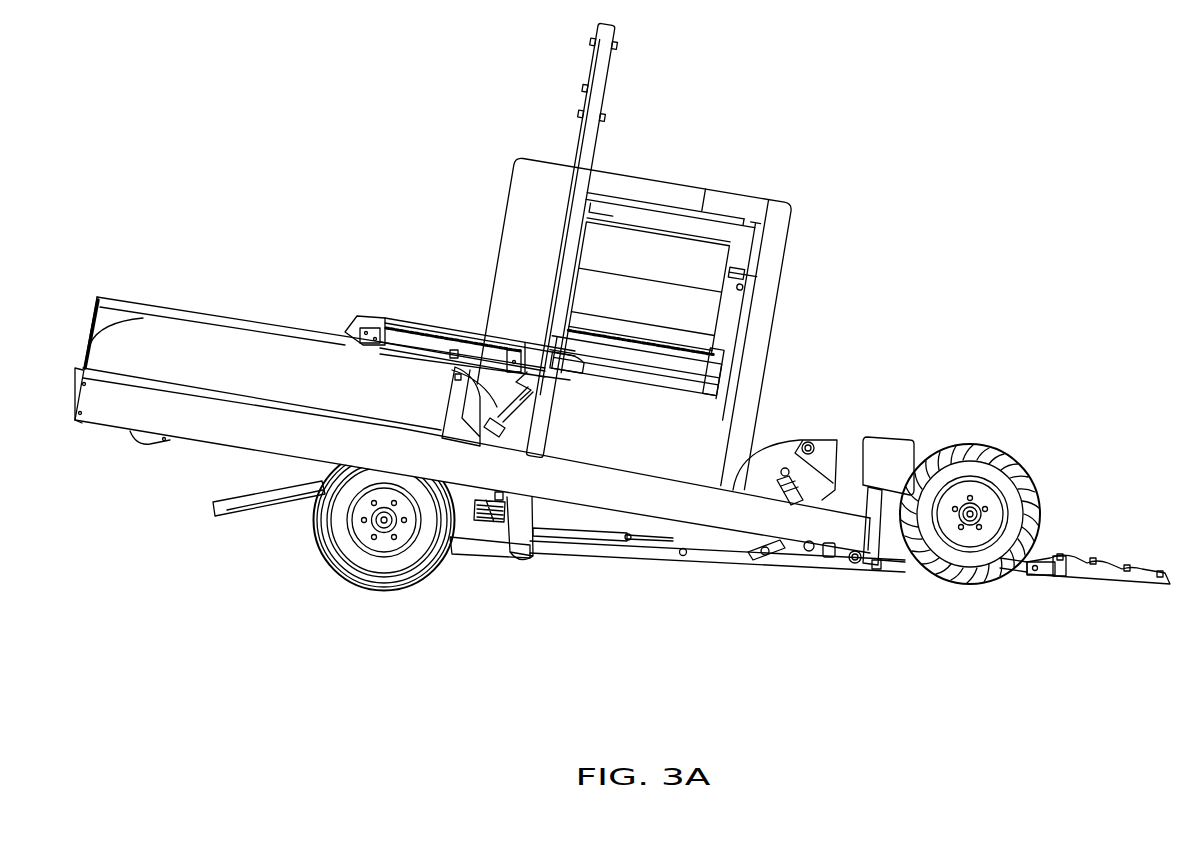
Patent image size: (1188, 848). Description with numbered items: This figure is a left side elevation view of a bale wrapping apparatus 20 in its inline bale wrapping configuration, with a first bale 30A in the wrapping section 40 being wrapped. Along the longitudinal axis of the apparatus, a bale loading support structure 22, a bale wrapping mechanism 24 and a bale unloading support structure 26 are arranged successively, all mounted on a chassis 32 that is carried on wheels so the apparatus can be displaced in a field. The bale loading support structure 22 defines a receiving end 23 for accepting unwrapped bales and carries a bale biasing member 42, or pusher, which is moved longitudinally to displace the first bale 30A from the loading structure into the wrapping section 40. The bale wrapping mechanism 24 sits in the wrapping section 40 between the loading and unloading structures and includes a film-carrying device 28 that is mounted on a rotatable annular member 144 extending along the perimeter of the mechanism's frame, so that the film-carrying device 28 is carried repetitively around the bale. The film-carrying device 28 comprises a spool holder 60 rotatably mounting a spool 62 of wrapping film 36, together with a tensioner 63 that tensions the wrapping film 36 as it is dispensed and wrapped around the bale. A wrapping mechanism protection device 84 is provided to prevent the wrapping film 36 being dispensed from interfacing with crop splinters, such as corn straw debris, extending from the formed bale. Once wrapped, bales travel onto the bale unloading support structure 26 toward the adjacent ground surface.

The bale wrapping apparatus 20 is at (938, 152).
The bale loading support structure 22 is at (232, 252).
The receiving end 23 is at (69, 290).
The bale wrapping mechanism 24 is at (720, 96).
The bale unloading support structure 26 is at (1068, 458).
The film-carrying device 28 is at (765, 205).
The first bale 30A is at (690, 195).
The chassis 32 is at (160, 418).
The wrapping film 36 is at (738, 204).
The wrapping section 40 is at (473, 581).
The bale biasing member 42 is at (488, 404).
The spool holder 60 is at (745, 277).
The spool 62 is at (627, 255).
The tensioner 63 is at (698, 362).
The wrapping mechanism protection device 84 is at (720, 240).
The rotatable annular member 144 is at (588, 148).